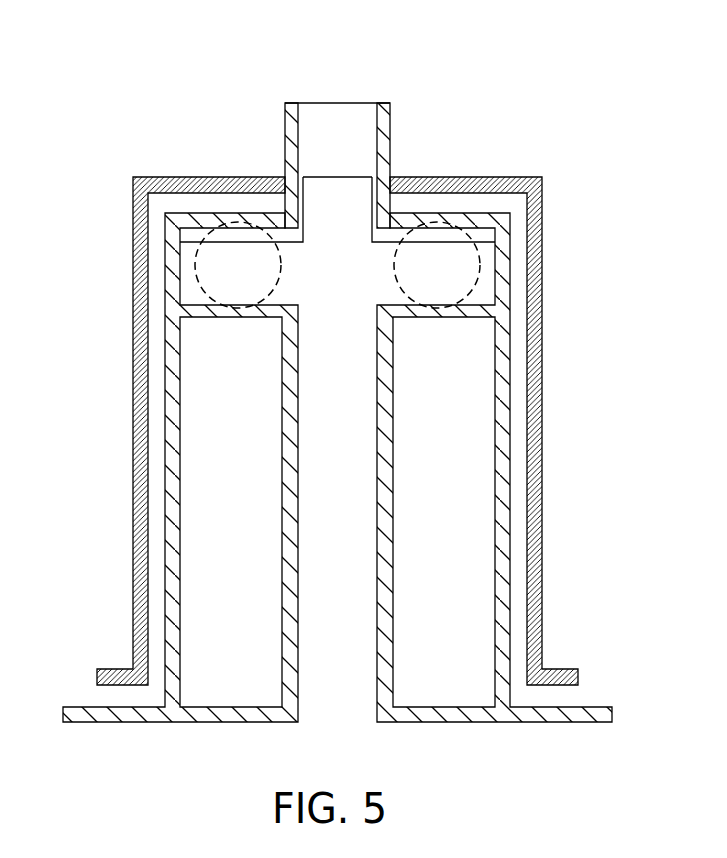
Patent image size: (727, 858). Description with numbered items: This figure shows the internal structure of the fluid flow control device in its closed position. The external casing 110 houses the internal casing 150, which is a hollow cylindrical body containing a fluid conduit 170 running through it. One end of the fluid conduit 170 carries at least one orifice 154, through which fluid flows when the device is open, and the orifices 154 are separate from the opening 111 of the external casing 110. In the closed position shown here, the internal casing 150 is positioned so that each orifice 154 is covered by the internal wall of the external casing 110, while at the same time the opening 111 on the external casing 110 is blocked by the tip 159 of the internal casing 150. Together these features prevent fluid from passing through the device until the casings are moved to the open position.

The external casing 110 is at (133, 361).
The opening 111 is at (335, 102).
The internal casing 150 is at (513, 363).
The orifice 154 is at (467, 273).
The tip 159 is at (373, 202).
The fluid conduit 170 is at (363, 537).